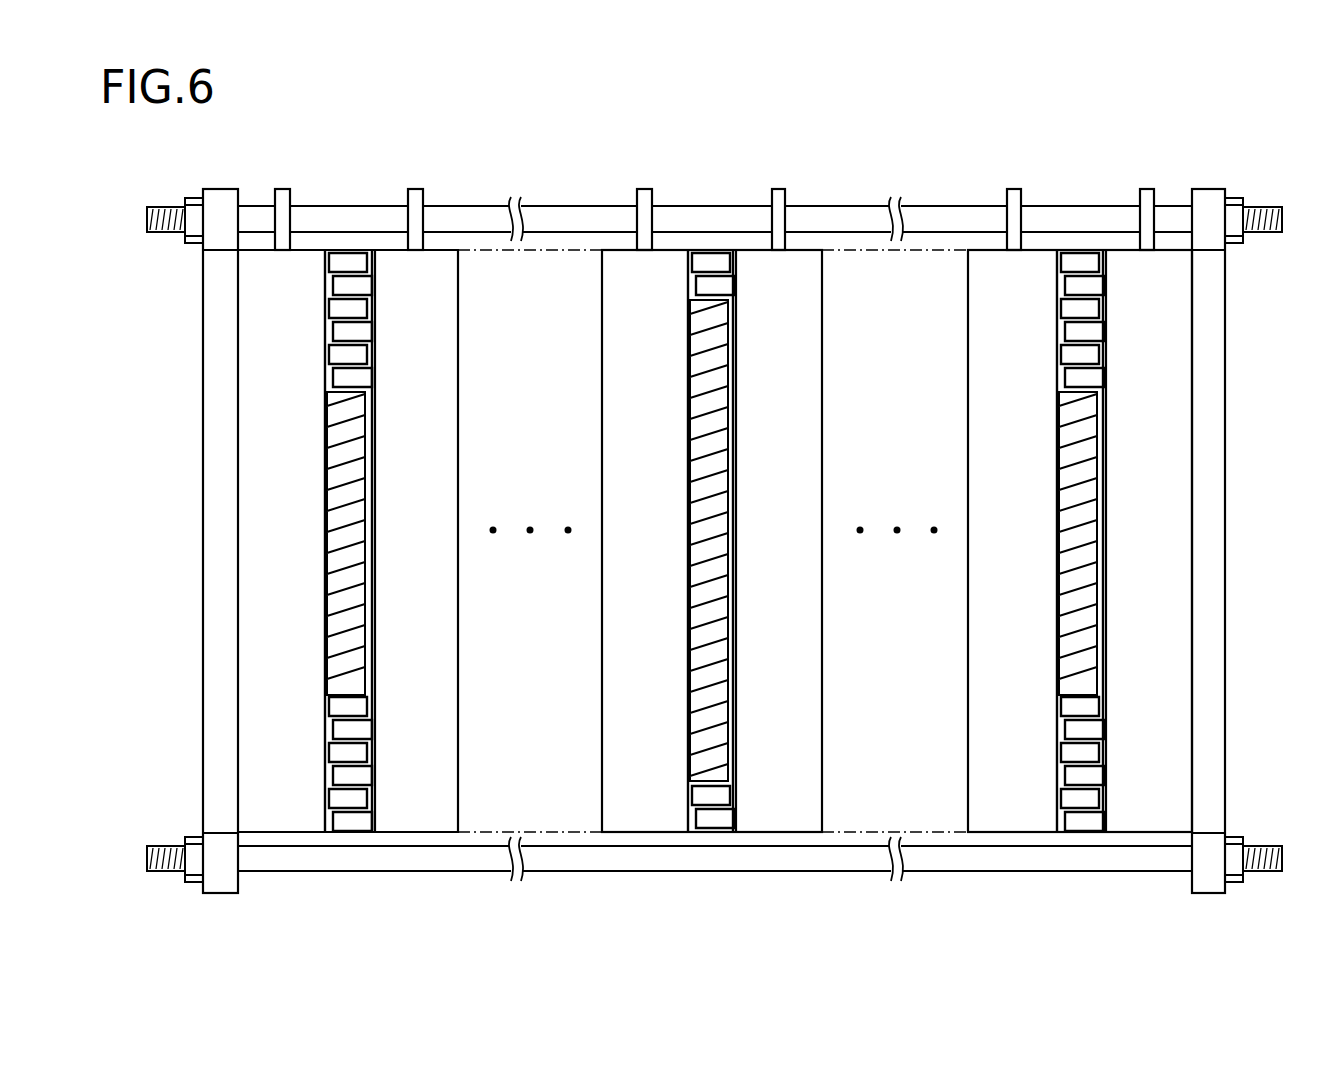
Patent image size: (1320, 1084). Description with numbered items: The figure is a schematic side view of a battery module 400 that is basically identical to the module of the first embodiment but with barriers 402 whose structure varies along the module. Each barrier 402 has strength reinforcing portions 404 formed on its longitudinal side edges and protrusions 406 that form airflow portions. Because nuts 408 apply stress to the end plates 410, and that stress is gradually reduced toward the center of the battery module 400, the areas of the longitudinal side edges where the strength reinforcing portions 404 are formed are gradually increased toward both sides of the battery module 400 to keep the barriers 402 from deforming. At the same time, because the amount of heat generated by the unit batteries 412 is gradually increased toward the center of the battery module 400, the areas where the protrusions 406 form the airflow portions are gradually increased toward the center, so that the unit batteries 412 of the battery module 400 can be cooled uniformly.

The battery module 400 is at (681, 172).
The barrier 402 is at (348, 852).
The strength reinforcing portion 404 is at (378, 255).
The protrusion 406 is at (378, 391).
The nut 408 is at (192, 198).
The end plate 410 is at (204, 374).
The unit battery 412 is at (286, 852).